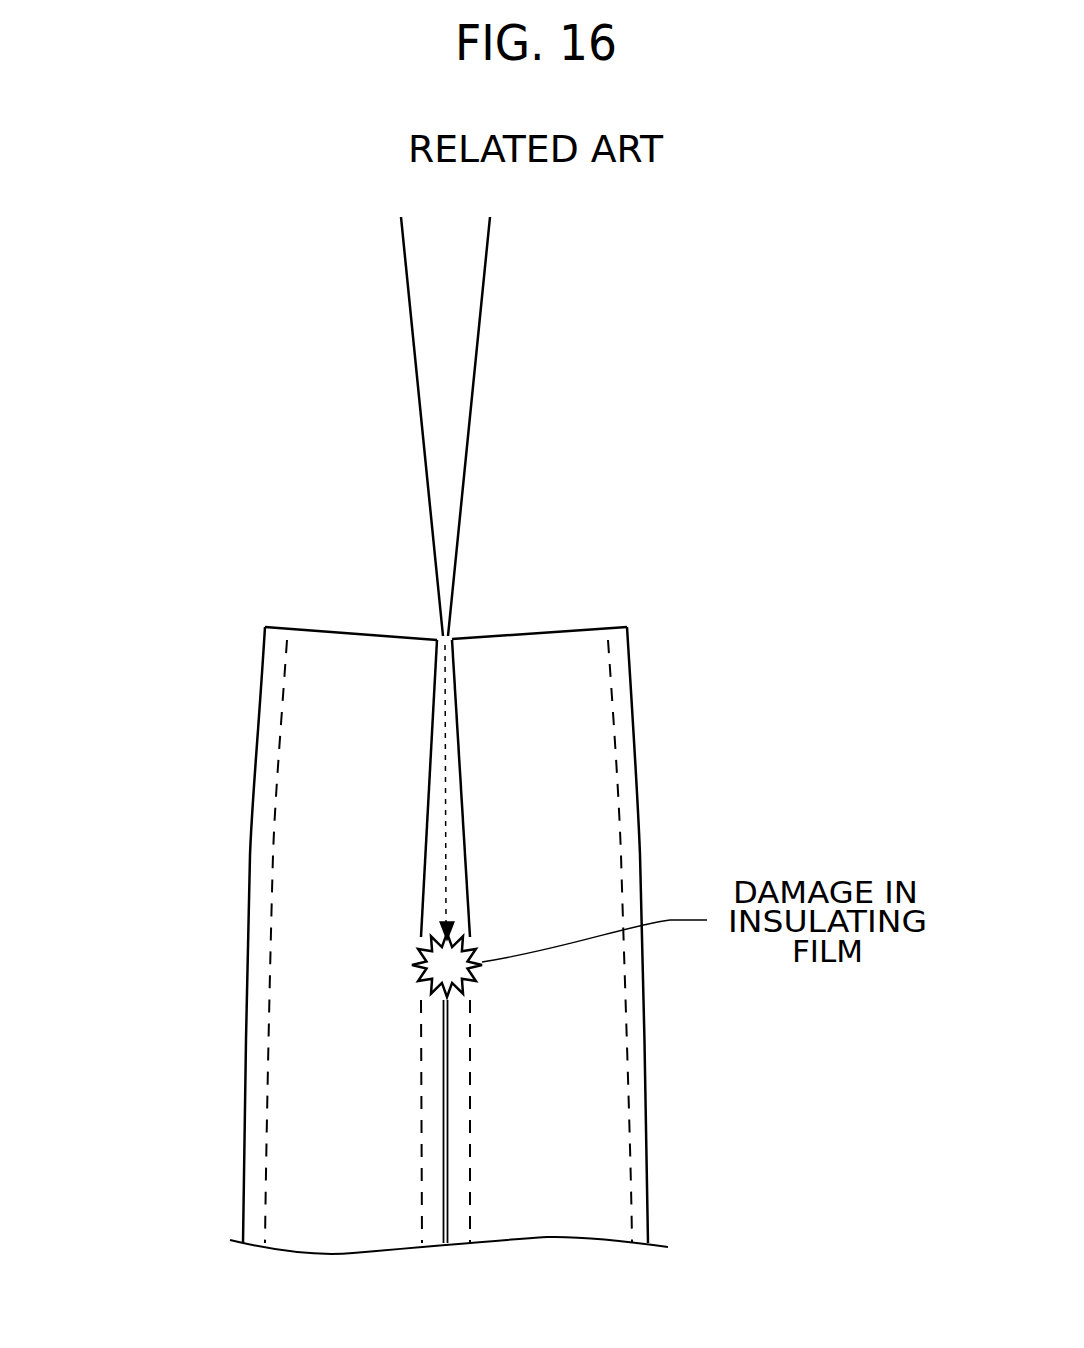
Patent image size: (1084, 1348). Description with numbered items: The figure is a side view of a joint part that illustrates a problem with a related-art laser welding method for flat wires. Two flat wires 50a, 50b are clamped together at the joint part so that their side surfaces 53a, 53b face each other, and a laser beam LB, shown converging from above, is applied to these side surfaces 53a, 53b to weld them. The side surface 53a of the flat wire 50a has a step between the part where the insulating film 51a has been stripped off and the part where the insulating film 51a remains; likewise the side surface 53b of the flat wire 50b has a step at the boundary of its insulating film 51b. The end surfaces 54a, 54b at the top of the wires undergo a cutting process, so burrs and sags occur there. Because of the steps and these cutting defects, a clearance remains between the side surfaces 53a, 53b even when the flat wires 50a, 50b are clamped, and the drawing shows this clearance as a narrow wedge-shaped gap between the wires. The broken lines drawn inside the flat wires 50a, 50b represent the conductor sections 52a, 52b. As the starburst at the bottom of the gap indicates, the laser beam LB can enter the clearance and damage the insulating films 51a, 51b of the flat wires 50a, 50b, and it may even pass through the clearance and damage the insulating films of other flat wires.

The laser beam LB is at (471, 330).
The flat wire 50a is at (230, 698).
The flat wire 50b is at (665, 696).
The insulating film 51a is at (268, 763).
The insulating film 51b is at (627, 762).
The conductor section 52a is at (270, 852).
The conductor section 52b is at (648, 848).
The side surface 53a is at (429, 762).
The side surface 53b is at (462, 762).
The end surface 54a is at (338, 630).
The end surface 54b is at (550, 629).